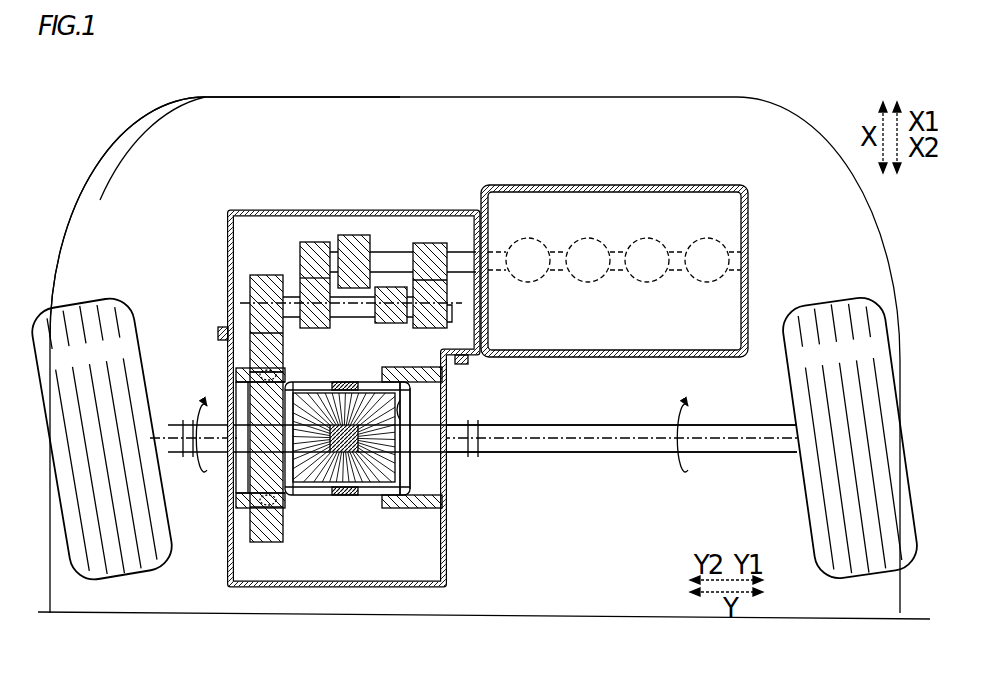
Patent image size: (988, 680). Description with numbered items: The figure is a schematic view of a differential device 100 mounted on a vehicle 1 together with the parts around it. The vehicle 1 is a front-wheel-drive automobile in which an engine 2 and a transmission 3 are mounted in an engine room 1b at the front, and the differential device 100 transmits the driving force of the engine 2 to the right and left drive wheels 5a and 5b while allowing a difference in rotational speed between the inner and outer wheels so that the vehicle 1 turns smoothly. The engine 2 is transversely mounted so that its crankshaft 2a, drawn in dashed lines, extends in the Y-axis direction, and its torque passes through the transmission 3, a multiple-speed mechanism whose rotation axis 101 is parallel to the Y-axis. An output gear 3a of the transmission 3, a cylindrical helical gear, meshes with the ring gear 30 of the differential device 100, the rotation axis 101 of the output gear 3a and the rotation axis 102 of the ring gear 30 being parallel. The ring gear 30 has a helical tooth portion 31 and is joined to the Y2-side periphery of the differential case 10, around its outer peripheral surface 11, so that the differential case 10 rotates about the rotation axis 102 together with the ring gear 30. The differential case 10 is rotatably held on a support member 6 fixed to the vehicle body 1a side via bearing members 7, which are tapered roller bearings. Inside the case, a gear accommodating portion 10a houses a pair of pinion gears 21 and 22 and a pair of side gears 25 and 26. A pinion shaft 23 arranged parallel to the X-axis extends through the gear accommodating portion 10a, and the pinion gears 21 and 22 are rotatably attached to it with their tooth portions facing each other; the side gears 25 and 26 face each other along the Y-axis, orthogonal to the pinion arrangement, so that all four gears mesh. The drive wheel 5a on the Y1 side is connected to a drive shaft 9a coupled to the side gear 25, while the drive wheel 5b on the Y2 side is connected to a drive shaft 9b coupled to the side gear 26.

The vehicle 1 is at (100, 104).
The vehicle body 1a is at (85, 190).
The engine room 1b is at (160, 158).
The differential device 100 is at (219, 390).
The engine 2 is at (614, 232).
The crankshaft 2a is at (496, 262).
The rotation axis 101 is at (458, 300).
The transmission 3 is at (290, 210).
The output gear 3a is at (257, 272).
The drive wheel 5a is at (855, 300).
The drive wheel 5b is at (103, 302).
The bearing members 7 is at (226, 385).
The drive shaft 9a is at (770, 430).
The drive shaft 9b is at (176, 430).
The rotation axis 102 is at (548, 452).
The support member 6 is at (230, 503).
The ring gear 30 is at (252, 548).
The helical tooth portion 31 is at (265, 537).
The differential case 10 is at (407, 504).
The gear accommodating portion 10a is at (405, 402).
The outer peripheral surface 11 is at (413, 458).
The pinion gear 21 is at (368, 387).
The pinion gear 22 is at (368, 490).
The pinion shaft 23 is at (345, 497).
The side gear 25 is at (412, 505).
The side gear 26 is at (303, 493).